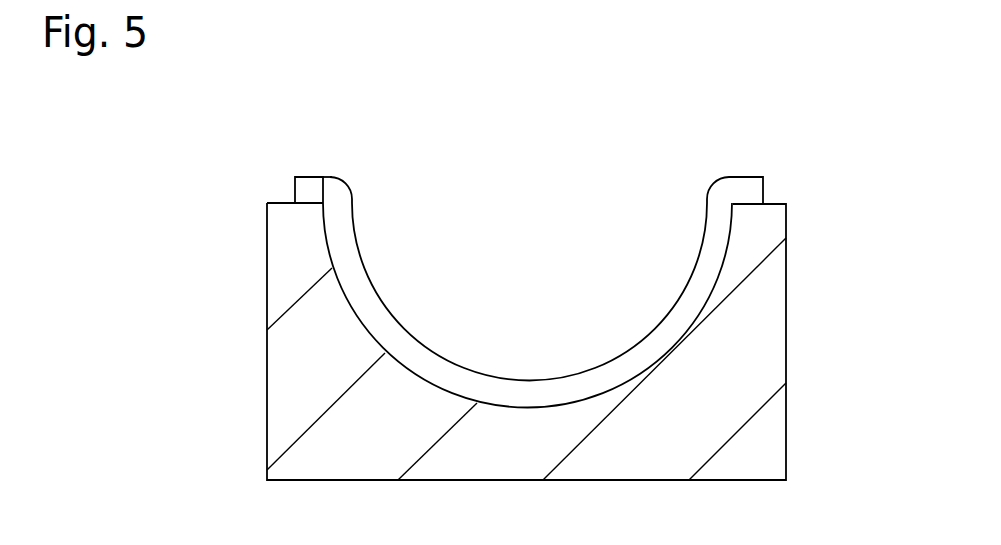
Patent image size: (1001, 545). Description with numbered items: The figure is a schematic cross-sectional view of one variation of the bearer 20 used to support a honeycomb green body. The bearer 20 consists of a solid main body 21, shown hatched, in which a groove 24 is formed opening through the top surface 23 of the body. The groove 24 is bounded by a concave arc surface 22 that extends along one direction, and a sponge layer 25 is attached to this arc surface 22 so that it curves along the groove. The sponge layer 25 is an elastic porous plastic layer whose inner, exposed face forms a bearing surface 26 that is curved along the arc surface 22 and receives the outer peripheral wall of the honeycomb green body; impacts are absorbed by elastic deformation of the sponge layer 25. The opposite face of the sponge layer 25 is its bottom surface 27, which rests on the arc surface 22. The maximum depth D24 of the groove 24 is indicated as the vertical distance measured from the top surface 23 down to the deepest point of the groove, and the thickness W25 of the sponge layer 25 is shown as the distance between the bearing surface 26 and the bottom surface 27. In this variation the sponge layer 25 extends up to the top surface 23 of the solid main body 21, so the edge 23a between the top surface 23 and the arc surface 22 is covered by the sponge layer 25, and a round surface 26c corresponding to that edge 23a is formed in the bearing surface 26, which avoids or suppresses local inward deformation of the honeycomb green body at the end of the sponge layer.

The bearer 20 is at (92, 171).
The solid main body 21 is at (772, 402).
The arc surface 22 is at (722, 270).
The top surface 23 is at (297, 203).
The edge 23a is at (733, 207).
The groove 24 is at (548, 305).
The sponge layer 25 is at (414, 352).
The bearing surface 26 is at (662, 322).
The round surface 26c is at (343, 178).
The bottom surface 27 is at (751, 205).
The maximum depth of the groove D24 is at (588, 408).
The thickness of the sponge layer W25 is at (270, 115).